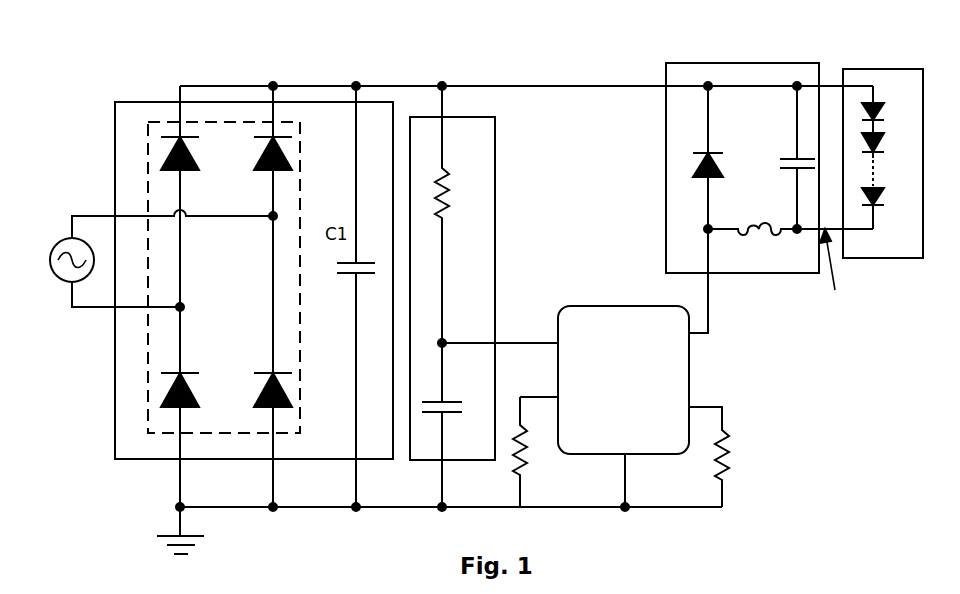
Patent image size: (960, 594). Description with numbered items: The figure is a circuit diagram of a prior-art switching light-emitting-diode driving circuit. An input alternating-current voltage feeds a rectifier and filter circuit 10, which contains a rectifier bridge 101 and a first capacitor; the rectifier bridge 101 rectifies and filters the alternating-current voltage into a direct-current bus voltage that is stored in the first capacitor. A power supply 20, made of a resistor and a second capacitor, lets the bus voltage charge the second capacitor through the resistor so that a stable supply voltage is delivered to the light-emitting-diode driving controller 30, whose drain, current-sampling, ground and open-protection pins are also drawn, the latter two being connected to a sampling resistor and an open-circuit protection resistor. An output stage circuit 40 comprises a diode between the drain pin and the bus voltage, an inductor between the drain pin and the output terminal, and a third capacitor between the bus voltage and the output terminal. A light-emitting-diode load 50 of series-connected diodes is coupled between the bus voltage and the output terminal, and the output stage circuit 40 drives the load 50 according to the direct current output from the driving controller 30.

The rectifier and filter circuit 10 is at (204, 281).
The rectifier bridge 101 is at (163, 196).
The power supply 20 is at (452, 130).
The LED driving controller 30 is at (680, 382).
The output stage circuit 40 is at (738, 68).
The LED load 50 is at (890, 78).